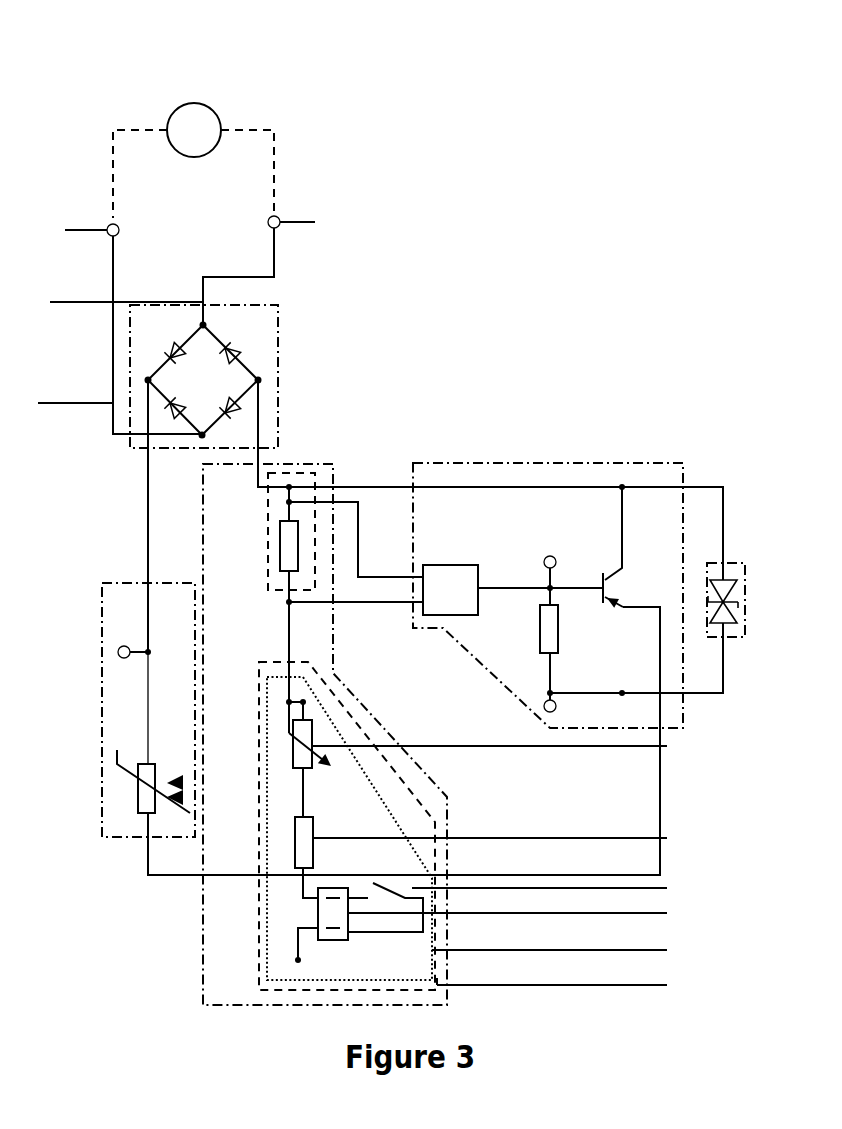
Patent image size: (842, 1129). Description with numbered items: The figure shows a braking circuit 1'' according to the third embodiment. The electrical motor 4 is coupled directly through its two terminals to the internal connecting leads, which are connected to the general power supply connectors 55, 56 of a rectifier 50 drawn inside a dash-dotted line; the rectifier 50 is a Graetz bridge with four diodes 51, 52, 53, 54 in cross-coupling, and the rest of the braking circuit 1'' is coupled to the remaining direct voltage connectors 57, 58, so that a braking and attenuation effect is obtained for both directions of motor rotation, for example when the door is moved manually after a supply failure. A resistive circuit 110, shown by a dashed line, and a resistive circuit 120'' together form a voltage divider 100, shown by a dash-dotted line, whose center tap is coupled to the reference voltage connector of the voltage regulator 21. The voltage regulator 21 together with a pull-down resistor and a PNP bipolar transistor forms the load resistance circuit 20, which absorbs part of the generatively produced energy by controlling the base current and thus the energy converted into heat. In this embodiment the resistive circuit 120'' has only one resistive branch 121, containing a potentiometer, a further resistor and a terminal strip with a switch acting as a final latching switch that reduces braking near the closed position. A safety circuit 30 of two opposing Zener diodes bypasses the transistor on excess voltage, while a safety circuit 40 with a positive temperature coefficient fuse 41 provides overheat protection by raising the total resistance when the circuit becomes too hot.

The braking circuit 1'' is at (366, 500).
The electrical motor 4 is at (194, 103).
The load resistance circuit 20 is at (513, 463).
The voltage regulator 21 is at (450, 590).
The safety circuit 30 is at (745, 573).
The safety circuit 40 is at (102, 732).
The fuse 41 is at (138, 800).
The rectifier 50 is at (278, 388).
The diode 51 is at (225, 343).
The diode 52 is at (217, 412).
The diode 53 is at (190, 410).
The diode 54 is at (168, 355).
The power supply connector 55 is at (205, 325).
The power supply connector 56 is at (200, 437).
The direct voltage connector 57 is at (146, 380).
The direct voltage connector 58 is at (262, 376).
The voltage divider 100 is at (320, 463).
The resistive circuit 110 is at (295, 470).
The resistive circuit 120'' is at (494, 832).
The resistive branch 121 is at (505, 925).